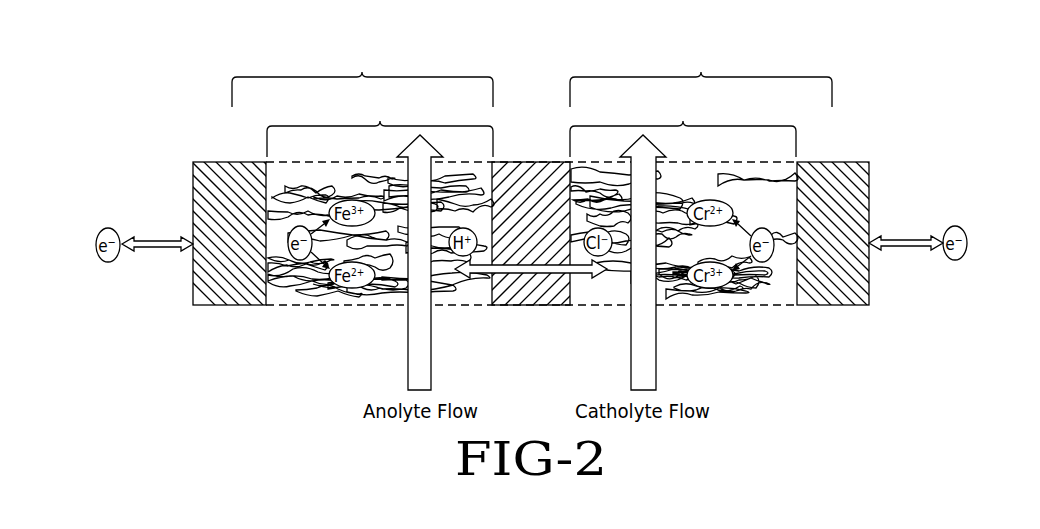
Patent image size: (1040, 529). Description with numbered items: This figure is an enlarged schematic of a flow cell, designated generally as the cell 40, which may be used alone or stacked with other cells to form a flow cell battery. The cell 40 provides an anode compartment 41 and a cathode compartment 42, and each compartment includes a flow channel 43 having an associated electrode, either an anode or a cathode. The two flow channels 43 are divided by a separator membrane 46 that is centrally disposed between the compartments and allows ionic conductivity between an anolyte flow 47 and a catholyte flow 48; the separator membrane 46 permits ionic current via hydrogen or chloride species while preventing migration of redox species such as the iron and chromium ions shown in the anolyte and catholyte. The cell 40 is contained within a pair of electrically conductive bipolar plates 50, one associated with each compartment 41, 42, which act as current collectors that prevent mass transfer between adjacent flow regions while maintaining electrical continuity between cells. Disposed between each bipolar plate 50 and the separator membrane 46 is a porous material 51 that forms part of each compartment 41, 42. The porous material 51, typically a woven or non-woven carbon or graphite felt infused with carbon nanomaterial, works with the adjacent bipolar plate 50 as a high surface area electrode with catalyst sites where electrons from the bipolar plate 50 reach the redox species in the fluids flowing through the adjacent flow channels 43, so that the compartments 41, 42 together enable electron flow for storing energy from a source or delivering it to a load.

The cell 40 is at (553, 43).
The anode compartment 41 is at (362, 74).
The cathode compartment 42 is at (701, 74).
The flow channel 43 is at (531, 123).
The separator membrane 46 is at (535, 160).
The anolyte flow 47 is at (407, 360).
The catholyte flow 48 is at (656, 358).
The bipolar plate 50 is at (220, 180).
The porous material 51 is at (305, 290).